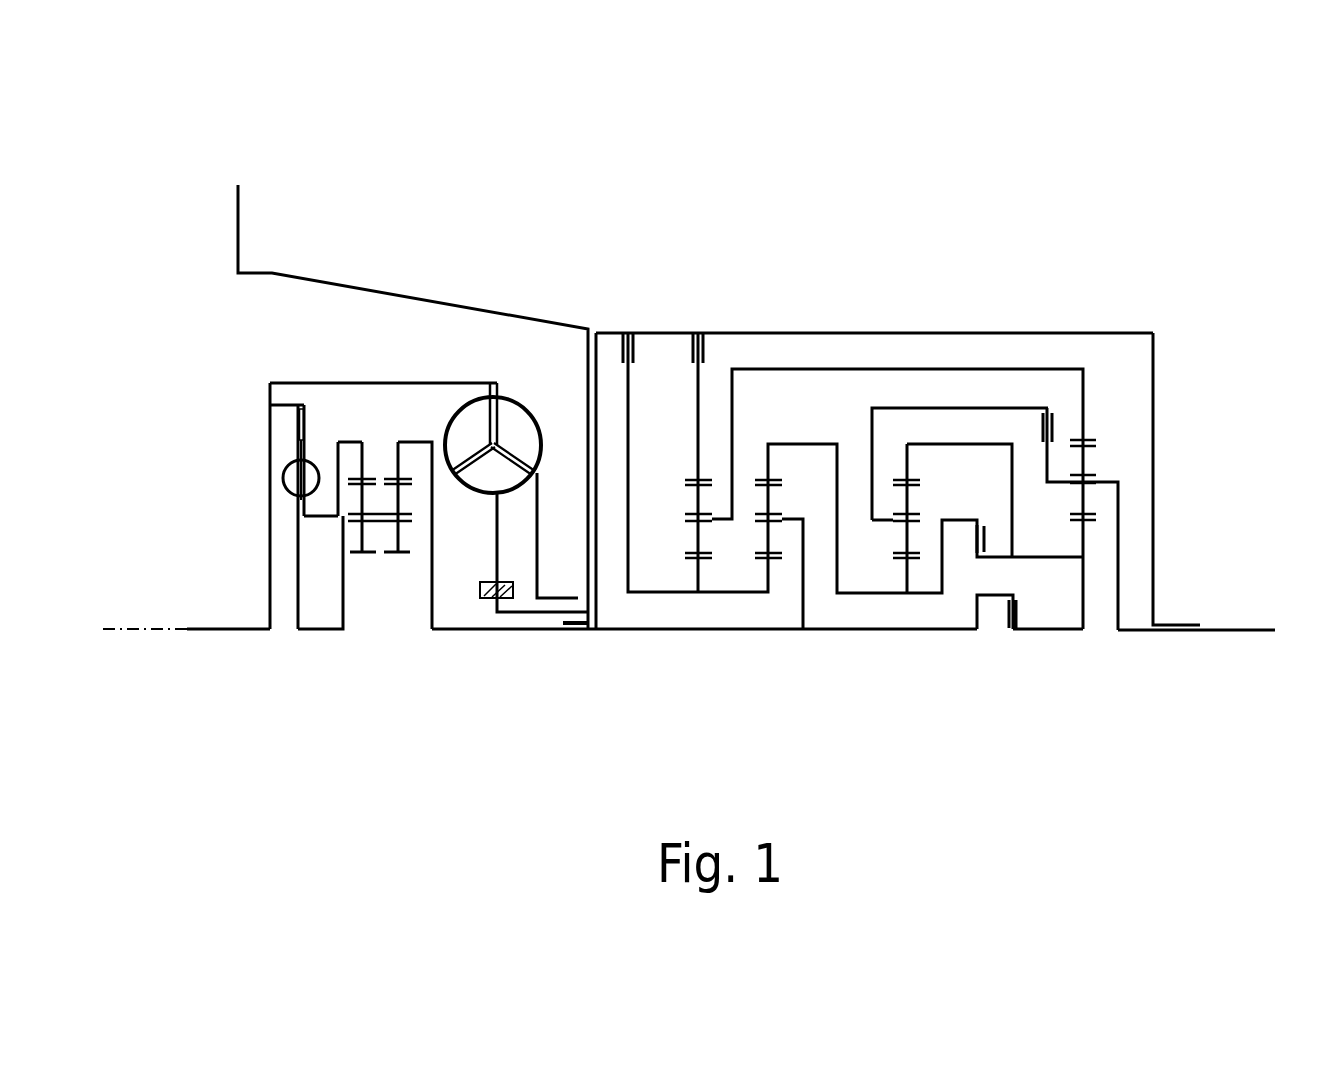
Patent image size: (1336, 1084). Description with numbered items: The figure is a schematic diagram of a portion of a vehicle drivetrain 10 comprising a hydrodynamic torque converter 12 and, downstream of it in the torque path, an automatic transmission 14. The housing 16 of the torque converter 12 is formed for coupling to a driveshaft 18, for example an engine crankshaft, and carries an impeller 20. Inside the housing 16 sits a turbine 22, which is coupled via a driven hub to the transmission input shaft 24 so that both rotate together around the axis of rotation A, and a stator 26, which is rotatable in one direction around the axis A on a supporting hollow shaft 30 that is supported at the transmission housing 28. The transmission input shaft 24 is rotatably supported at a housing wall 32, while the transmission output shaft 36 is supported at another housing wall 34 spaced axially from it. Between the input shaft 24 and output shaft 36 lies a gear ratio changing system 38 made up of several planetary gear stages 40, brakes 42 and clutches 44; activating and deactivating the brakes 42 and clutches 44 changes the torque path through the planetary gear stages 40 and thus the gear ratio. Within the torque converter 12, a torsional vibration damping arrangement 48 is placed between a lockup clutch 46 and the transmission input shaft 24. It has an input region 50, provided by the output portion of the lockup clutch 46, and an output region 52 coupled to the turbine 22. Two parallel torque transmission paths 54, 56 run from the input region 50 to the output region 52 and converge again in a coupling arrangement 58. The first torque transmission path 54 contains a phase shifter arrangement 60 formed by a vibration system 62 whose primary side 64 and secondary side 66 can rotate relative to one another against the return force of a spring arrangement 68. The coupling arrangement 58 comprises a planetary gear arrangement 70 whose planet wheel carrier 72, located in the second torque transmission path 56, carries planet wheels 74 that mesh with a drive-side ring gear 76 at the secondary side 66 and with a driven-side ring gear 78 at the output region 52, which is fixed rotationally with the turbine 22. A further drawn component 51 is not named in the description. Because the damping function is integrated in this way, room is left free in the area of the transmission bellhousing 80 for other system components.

The drivetrain 10 is at (967, 208).
The hydrodynamic torque converter 12 is at (345, 784).
The automatic transmission 14 is at (862, 722).
The housing 16 is at (353, 383).
The driveshaft 18 is at (222, 631).
The impeller 20 is at (513, 395).
The turbine 22 is at (491, 383).
The transmission input shaft 24 is at (562, 631).
The stator 26 is at (498, 470).
The transmission housing 28 is at (800, 333).
The supporting hollow shaft 30 is at (563, 625).
The housing wall 32 is at (597, 357).
The housing wall 34 is at (1155, 390).
The transmission output shaft 36 is at (1245, 633).
The gear ratio changing system 38 is at (1019, 346).
The planetary gear stages 40 is at (795, 491).
The brakes 42 is at (649, 349).
The clutches 44 is at (1053, 409).
The lockup clutch 46 is at (286, 414).
The torsional vibration damping arrangement 48 is at (394, 426).
The input region 50 is at (408, 692).
The bearing 51 is at (280, 427).
The output region 52 is at (414, 605).
The first torque transmission path 54 is at (339, 426).
The second torque transmission path 56 is at (285, 647).
The coupling arrangement 58 is at (389, 595).
The phase shifter arrangement 60 is at (283, 523).
The vibration system 62 is at (282, 497).
The primary side 64 is at (297, 448).
The secondary side 66 is at (306, 517).
The spring arrangement 68 is at (285, 470).
The planetary gear arrangement 70 is at (472, 383).
The planet wheel carrier 72 is at (343, 588).
The planet wheels 74 is at (399, 536).
The drive-side ring gear 76 is at (416, 350).
The driven-side ring gear 78 is at (399, 462).
The transmission bellhousing 80 is at (313, 277).
The axis of rotation A is at (136, 631).